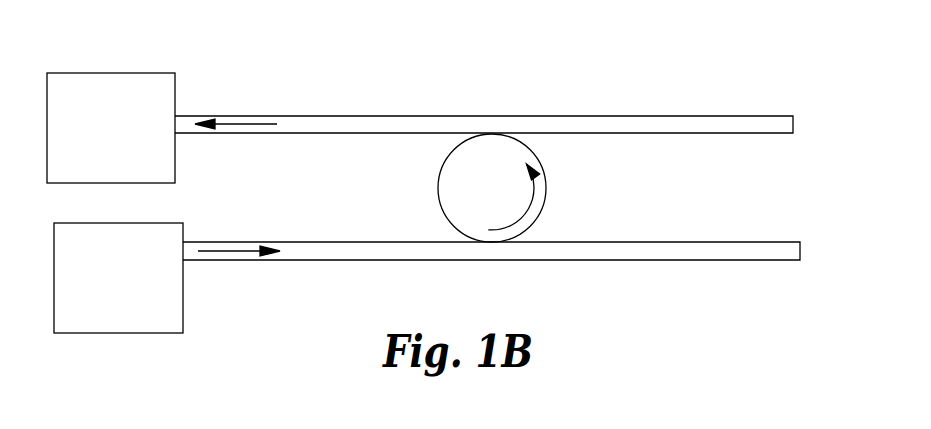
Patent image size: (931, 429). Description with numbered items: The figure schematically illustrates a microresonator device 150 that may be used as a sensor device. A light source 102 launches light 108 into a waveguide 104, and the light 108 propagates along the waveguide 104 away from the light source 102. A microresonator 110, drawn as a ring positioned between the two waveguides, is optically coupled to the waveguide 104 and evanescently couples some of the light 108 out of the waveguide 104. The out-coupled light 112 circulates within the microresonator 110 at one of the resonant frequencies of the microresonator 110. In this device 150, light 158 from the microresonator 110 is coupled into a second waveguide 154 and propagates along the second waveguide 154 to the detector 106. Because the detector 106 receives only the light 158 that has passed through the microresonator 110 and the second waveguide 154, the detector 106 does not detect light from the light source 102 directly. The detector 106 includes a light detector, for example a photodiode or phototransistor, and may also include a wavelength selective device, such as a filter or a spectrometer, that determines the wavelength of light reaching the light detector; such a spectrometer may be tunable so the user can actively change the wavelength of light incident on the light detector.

The light source 102 is at (117, 333).
The waveguide 104 is at (395, 261).
The detector unit 106 is at (112, 73).
The light 108 is at (225, 252).
The microresonator 110 is at (438, 183).
The out-coupled light 112 is at (540, 163).
The microresonator device 150 is at (677, 57).
The second waveguide 154 is at (400, 116).
The light 158 is at (238, 120).